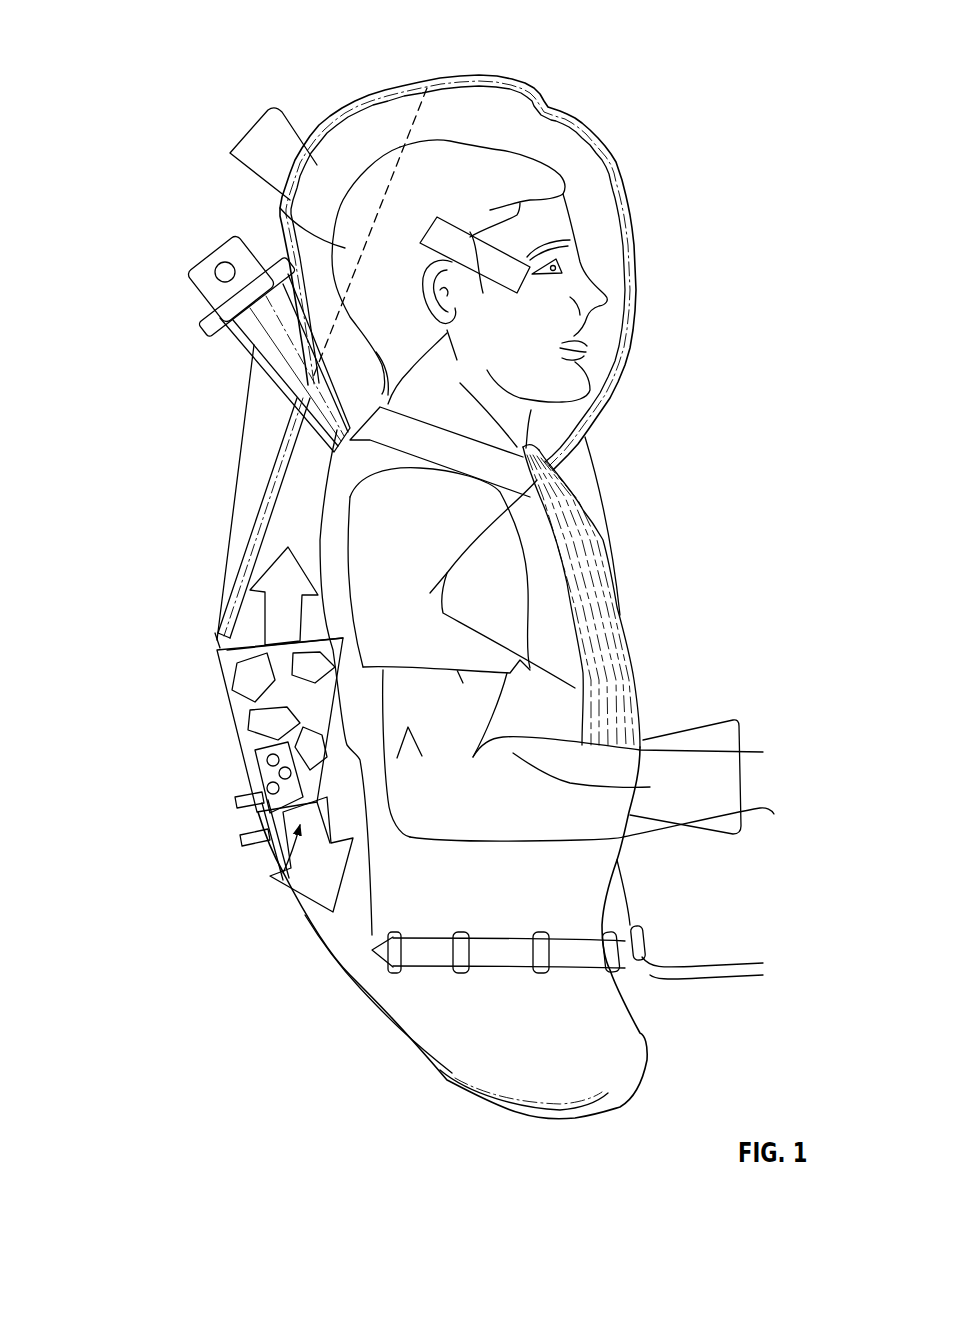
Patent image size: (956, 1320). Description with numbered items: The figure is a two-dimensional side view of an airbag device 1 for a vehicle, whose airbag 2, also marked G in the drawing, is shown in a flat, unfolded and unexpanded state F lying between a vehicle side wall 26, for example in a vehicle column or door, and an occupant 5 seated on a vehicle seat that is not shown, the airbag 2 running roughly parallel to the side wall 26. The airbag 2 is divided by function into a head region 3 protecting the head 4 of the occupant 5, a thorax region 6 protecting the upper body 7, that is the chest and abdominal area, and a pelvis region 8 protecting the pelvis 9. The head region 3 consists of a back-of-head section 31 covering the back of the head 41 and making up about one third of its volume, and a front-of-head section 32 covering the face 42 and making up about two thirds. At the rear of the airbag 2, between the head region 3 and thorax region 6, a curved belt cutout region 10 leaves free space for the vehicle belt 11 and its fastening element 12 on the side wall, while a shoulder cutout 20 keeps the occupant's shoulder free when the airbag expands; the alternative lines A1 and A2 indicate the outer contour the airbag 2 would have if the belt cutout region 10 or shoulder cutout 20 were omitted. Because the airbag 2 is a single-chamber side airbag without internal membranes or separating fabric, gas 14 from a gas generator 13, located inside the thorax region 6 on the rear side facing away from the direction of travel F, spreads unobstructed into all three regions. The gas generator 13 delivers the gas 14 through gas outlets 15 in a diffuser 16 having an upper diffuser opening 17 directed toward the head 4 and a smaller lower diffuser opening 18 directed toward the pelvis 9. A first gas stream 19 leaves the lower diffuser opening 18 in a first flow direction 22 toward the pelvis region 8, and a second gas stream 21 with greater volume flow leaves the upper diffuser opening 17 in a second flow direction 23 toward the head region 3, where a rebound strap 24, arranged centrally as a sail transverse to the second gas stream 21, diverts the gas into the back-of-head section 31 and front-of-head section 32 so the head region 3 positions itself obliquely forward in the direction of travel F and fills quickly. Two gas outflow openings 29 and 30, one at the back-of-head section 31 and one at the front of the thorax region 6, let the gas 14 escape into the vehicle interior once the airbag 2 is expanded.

The airbag device 1 is at (177, 66).
The airbag 2 is at (190, 494).
The garment G is at (376, 787).
The head region 3 is at (406, 315).
The head 4 is at (500, 298).
The occupant 5 is at (438, 593).
The thorax region 6 is at (416, 718).
The upper body 7 is at (409, 721).
The pelvis region 8 is at (546, 1023).
The pelvis 9 is at (646, 991).
The belt cutout region 10 is at (281, 438).
The vehicle belt 11 is at (263, 352).
The fastening element 12 is at (192, 277).
The gas generator 13 is at (262, 800).
The gas 14 is at (270, 723).
The gas outlets 15 is at (266, 786).
The diffuser 16 is at (333, 712).
The upper diffuser opening 17 is at (242, 640).
The lower diffuser opening 18 is at (285, 867).
The first gas stream 19 is at (320, 872).
The shoulder cutout 20 is at (595, 485).
The second gas stream 21 is at (284, 582).
The first flow direction 22 is at (340, 828).
The second flow direction 23 is at (246, 615).
The rebound strap 24 is at (447, 218).
The vehicle side wall 26 is at (162, 1086).
The gas outflow opening 29 is at (293, 177).
The gas outflow opening 30 is at (668, 763).
The back-of-head section 31 is at (351, 138).
The front-of-head section 32 is at (602, 236).
The back of the head 41 is at (280, 208).
The face opening 42 is at (537, 317).
The alternative line A1 is at (227, 492).
The alternative line A2 is at (618, 526).
The direction of travel F is at (672, 1138).